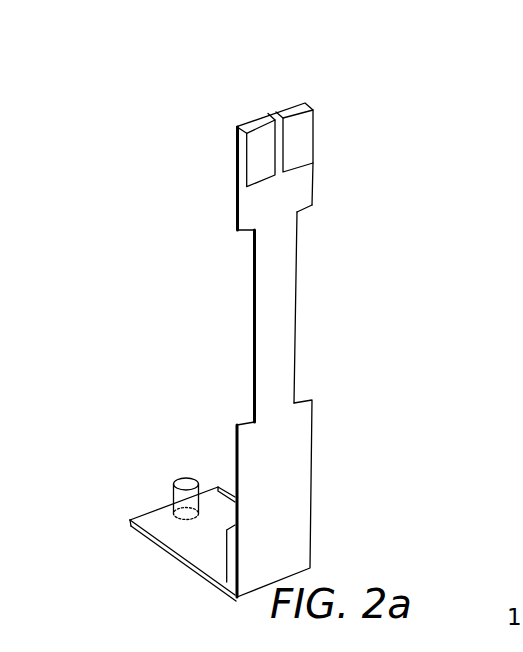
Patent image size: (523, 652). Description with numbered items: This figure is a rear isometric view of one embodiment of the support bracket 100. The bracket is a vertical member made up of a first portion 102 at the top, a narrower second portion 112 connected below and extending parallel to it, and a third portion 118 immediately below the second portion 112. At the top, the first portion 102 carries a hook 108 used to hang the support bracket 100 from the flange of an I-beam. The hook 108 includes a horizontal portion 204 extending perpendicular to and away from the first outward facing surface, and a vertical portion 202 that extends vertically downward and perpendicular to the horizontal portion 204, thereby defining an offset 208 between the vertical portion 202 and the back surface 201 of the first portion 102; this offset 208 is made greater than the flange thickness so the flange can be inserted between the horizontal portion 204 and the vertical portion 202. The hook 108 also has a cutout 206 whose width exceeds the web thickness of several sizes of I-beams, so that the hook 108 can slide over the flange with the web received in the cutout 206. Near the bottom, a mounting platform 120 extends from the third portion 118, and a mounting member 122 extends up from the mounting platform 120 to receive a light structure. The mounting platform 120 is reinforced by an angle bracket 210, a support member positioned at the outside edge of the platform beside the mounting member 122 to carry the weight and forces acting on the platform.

The support bracket 100 is at (114, 99).
The first portion 102 is at (383, 128).
The hook 108 is at (332, 85).
The second portion 112 is at (344, 318).
The third portion 118 is at (357, 490).
The mounting platform 120 is at (148, 512).
The mounting member 122 is at (185, 500).
The back surface 201 is at (297, 203).
The vertical portion 202 is at (262, 164).
The horizontal portion 204 is at (253, 128).
The cutout 206 is at (264, 94).
The offset 208 is at (243, 213).
The angle bracket 210 is at (183, 556).